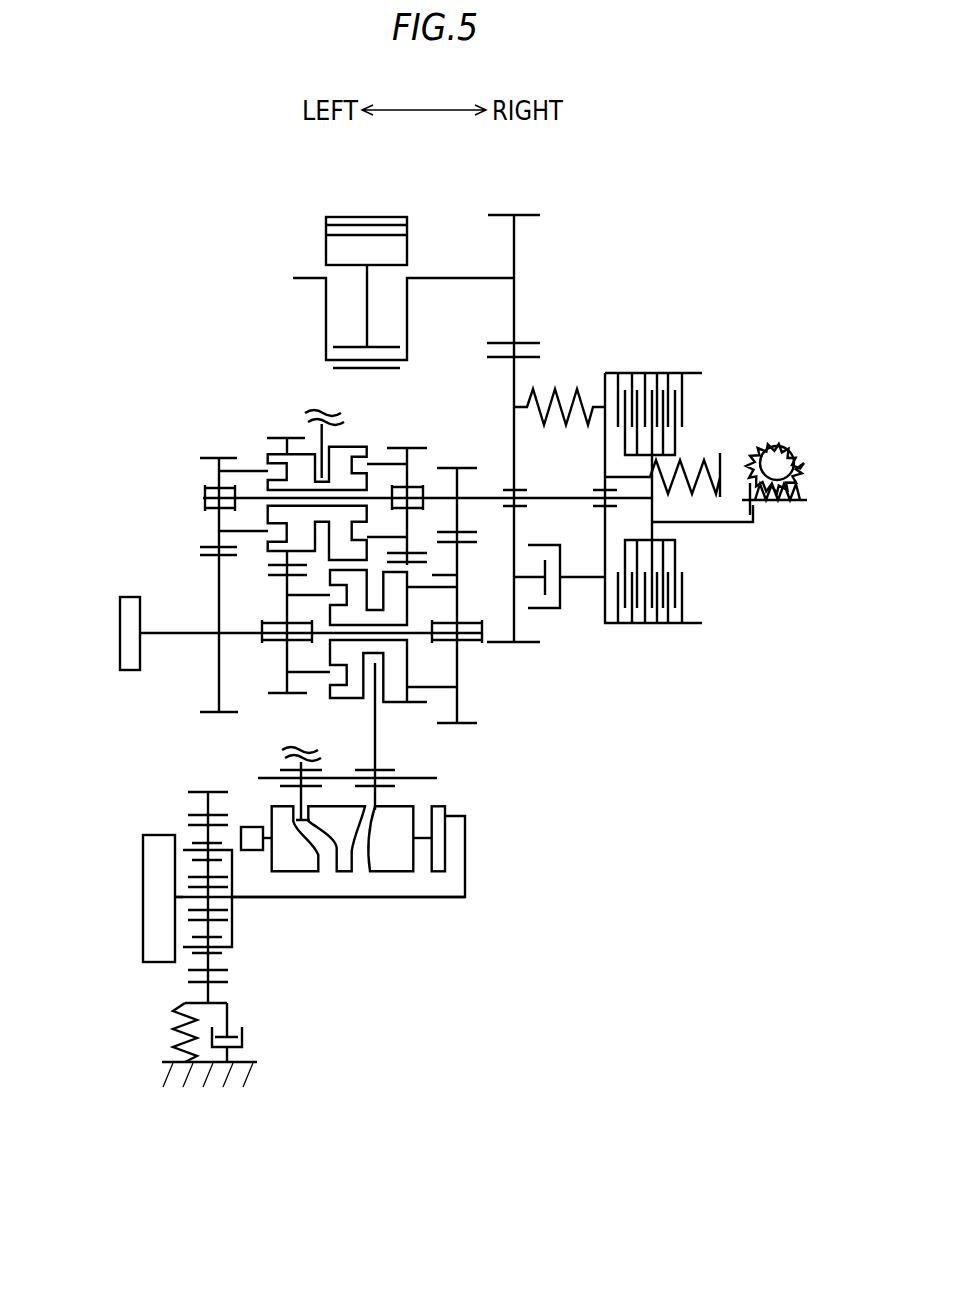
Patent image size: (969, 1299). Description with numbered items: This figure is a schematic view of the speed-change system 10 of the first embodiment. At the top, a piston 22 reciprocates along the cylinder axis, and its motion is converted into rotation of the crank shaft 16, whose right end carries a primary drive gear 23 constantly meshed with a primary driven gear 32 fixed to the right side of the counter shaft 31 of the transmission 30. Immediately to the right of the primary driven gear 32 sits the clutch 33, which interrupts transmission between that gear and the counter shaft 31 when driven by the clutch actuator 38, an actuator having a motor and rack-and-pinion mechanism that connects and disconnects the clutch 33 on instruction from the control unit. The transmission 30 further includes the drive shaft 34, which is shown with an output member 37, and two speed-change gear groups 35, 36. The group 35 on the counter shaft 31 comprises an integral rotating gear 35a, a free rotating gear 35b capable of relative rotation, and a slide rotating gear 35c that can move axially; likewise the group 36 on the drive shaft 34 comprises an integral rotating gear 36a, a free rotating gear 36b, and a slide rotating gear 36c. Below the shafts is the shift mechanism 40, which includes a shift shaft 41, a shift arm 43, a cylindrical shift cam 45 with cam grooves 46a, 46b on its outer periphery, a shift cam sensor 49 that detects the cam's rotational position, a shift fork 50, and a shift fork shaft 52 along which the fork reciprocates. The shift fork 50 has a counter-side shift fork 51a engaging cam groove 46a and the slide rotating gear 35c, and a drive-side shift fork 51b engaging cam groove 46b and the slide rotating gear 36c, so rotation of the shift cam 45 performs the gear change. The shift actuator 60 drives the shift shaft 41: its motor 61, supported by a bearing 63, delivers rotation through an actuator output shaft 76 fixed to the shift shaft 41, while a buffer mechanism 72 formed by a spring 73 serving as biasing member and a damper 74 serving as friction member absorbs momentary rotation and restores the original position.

The power transmission device 10 is at (147, 279).
The crank shaft 16 is at (294, 277).
The piston 22 is at (327, 240).
The primary drive gear 23 is at (527, 213).
The transmission 30 is at (149, 557).
The counter shaft 31 is at (208, 507).
The primary driven gear 32 is at (530, 357).
The clutch 33 is at (713, 394).
The drive shaft 34 is at (162, 632).
The speed-change gear group 35 is at (164, 476).
The integral rotating gear 35a is at (452, 466).
The free rotating gear 35b is at (219, 457).
The slide rotating gear 35c is at (287, 437).
The speed-change gear group 36 is at (162, 684).
The integral rotating gear 36a is at (210, 712).
The free rotating gear 36b is at (297, 694).
The slide rotating gear 36c is at (419, 705).
The output gear 37 is at (121, 630).
The clutch actuator 38 is at (801, 430).
The shift mechanism 40 is at (561, 751).
The shift shaft 41 is at (448, 897).
The shift arm 43 is at (467, 851).
The shift cam 45 is at (290, 873).
The cam groove 46a is at (323, 873).
The cam groove 46b is at (357, 873).
The shift cam sensor 49 is at (248, 853).
The shift fork 50 is at (313, 585).
The counter-side shift fork 51a is at (321, 418).
The drive-side shift fork 51b is at (378, 752).
The shift fork shaft 52 is at (417, 781).
The shift actuator 60 is at (96, 1023).
The motor 61 is at (143, 870).
The bearing 63 is at (169, 975).
The buffer mechanism 72 is at (212, 1099).
The spring 73 is at (170, 1035).
The damper 74 is at (247, 1037).
The actuator output shaft 76 is at (232, 932).